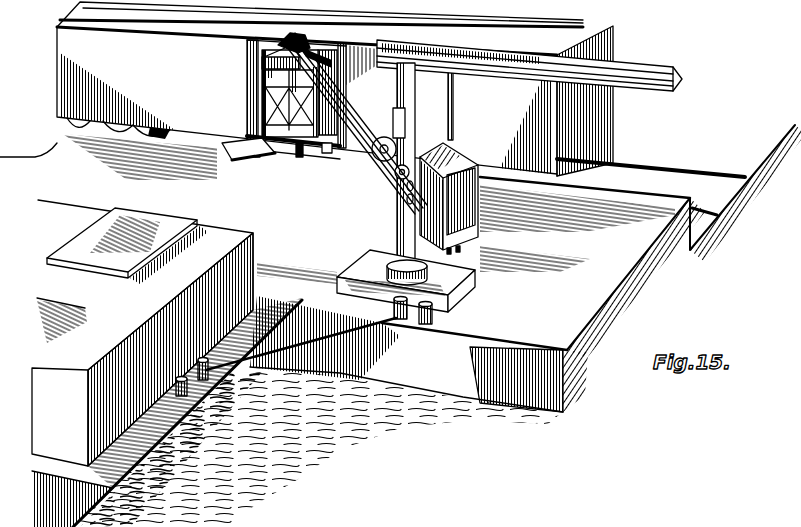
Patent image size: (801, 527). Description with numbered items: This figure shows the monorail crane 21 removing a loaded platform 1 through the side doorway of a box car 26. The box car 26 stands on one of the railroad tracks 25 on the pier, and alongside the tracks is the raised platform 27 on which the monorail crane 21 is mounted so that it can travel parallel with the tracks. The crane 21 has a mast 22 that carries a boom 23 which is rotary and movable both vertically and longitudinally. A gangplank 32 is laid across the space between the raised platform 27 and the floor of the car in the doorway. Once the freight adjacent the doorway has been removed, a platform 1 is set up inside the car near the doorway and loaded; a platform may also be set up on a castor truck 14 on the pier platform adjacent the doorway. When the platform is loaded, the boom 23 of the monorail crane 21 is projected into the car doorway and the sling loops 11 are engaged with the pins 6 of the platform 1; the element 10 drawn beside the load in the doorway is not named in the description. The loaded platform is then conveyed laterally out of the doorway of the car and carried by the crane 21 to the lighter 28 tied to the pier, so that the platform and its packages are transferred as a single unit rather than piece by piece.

The platform 1 is at (289, 158).
The pins 6 is at (262, 158).
The container 10 is at (247, 68).
The sling loops 11 is at (240, 100).
The castor truck 14 is at (328, 153).
The monorail crane 21 is at (470, 264).
The mast 22 is at (421, 83).
The boom 23 is at (344, 105).
The railroad tracks 25 is at (693, 166).
The box car 26 is at (608, 46).
The raised platform 27 is at (525, 268).
The lighter 28 is at (66, 218).
The gangplank 32 is at (253, 155).